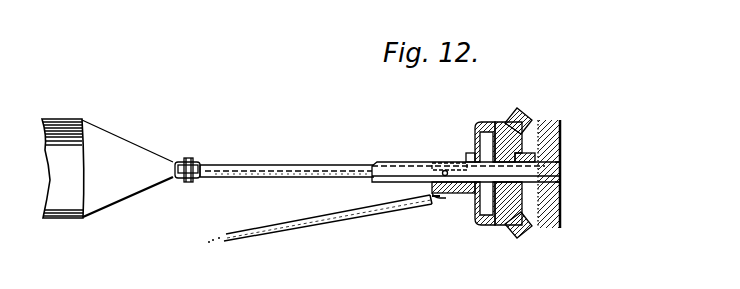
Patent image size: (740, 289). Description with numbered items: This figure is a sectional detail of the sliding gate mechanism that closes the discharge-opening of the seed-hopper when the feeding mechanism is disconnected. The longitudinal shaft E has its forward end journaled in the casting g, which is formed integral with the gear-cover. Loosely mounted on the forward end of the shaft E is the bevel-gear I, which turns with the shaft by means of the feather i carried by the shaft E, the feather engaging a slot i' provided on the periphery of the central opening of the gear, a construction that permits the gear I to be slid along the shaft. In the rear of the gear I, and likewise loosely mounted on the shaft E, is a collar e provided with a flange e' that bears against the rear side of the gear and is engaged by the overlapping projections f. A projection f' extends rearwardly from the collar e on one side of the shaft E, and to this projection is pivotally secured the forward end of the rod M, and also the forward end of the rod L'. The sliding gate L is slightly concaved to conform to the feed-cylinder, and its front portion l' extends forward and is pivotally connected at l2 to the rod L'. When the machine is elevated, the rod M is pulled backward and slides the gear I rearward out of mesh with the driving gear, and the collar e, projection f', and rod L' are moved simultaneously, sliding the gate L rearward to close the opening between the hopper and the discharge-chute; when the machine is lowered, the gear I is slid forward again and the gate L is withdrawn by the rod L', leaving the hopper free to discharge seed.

The sliding gate L is at (82, 158).
The front portion of the gate l' is at (127, 168).
The pivotal connection l2 is at (190, 160).
The rod L' is at (333, 154).
The rod M is at (351, 218).
The shaft E is at (562, 171).
The collar e is at (453, 210).
The projection f' is at (415, 228).
The flange e' is at (451, 142).
The overlapping projections f is at (488, 185).
The bevel-gear I is at (518, 110).
The feather i is at (537, 125).
The slot i' is at (583, 137).
The casting g is at (563, 205).